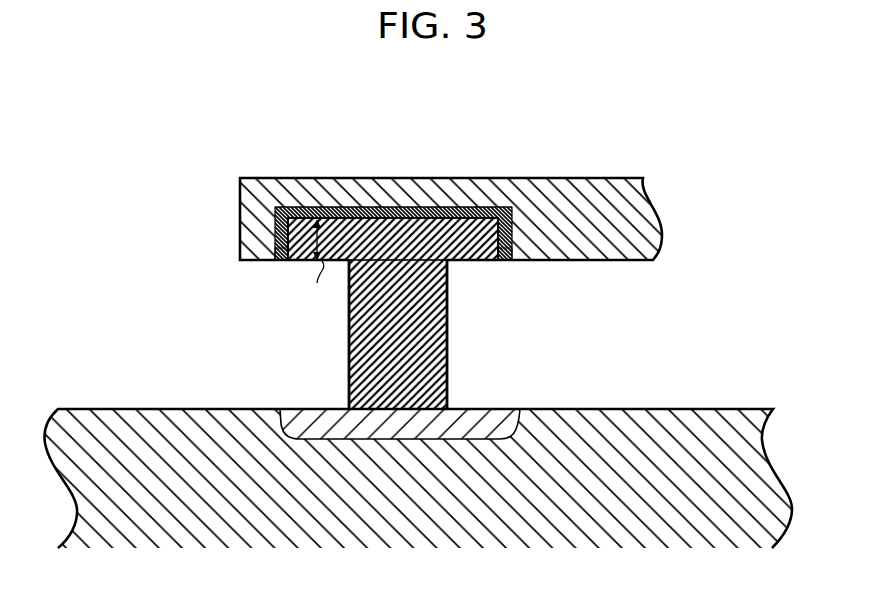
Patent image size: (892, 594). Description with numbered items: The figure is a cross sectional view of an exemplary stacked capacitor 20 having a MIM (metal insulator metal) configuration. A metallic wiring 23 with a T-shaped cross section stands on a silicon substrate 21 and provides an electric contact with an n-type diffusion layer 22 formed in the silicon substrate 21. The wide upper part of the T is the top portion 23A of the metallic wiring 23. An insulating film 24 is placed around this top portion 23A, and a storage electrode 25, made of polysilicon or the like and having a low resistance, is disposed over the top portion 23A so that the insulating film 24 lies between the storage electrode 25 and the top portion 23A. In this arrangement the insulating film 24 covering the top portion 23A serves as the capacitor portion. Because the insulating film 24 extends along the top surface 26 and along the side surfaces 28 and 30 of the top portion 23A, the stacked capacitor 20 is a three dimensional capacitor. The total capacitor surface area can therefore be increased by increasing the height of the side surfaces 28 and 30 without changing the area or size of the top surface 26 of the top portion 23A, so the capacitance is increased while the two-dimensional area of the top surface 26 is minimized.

The stacked capacitor 20 is at (658, 170).
The silicon substrate 21 is at (720, 417).
The n-type diffusion layer 22 is at (505, 414).
The metallic wiring 23 is at (348, 350).
The top portion 23A is at (471, 265).
The insulating film 24 is at (334, 207).
The storage electrode 25 is at (575, 188).
The top surface 26 is at (422, 207).
The side surface 28 is at (292, 259).
The side surface 30 is at (485, 258).